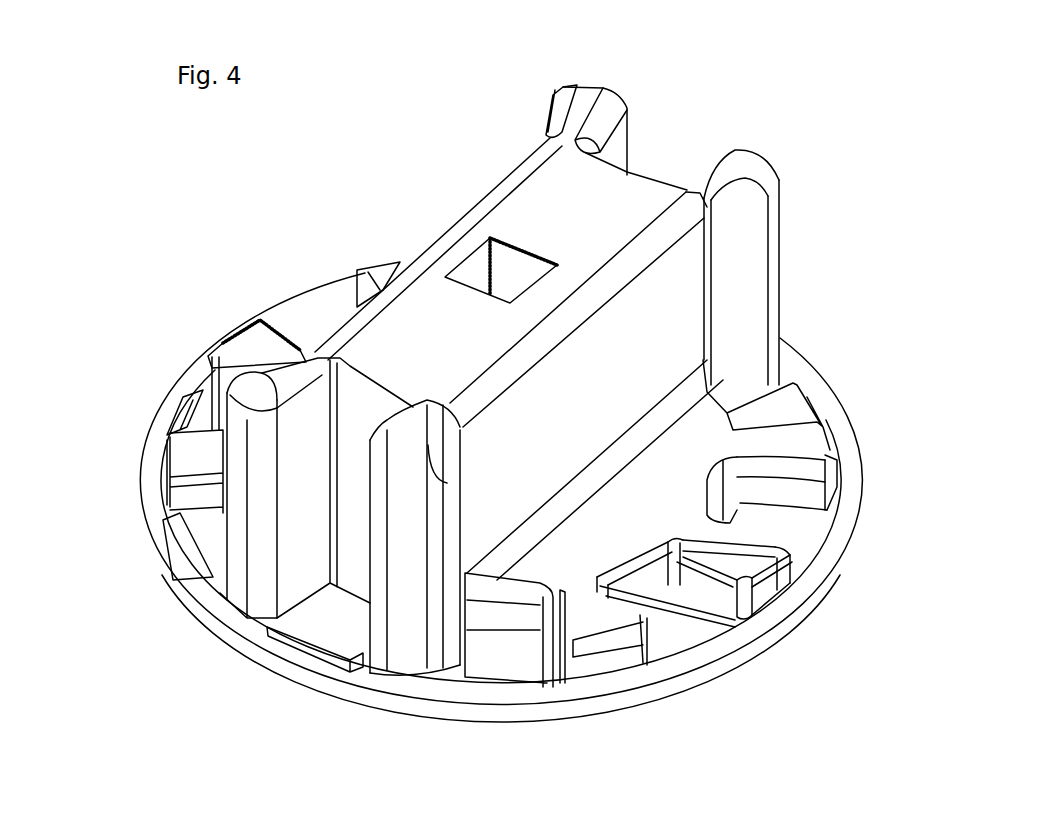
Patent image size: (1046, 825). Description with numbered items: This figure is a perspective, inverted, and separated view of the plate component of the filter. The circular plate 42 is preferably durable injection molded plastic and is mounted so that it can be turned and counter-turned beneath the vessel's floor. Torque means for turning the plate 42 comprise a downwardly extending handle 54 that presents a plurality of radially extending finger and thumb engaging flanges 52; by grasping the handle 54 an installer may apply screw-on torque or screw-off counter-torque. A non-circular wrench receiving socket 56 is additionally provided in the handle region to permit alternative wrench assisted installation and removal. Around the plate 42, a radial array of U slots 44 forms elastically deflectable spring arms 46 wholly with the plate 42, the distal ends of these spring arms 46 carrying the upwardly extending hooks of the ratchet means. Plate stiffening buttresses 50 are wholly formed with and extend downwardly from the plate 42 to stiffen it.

The circular plate 42 is at (187, 388).
The U slots 44 is at (197, 540).
The spring arms 46 is at (803, 413).
The plate stiffening buttresses 50 is at (193, 462).
The finger and thumb engaging flanges 52 is at (580, 92).
The handle 54 is at (535, 183).
The wrench receiving socket 56 is at (479, 272).